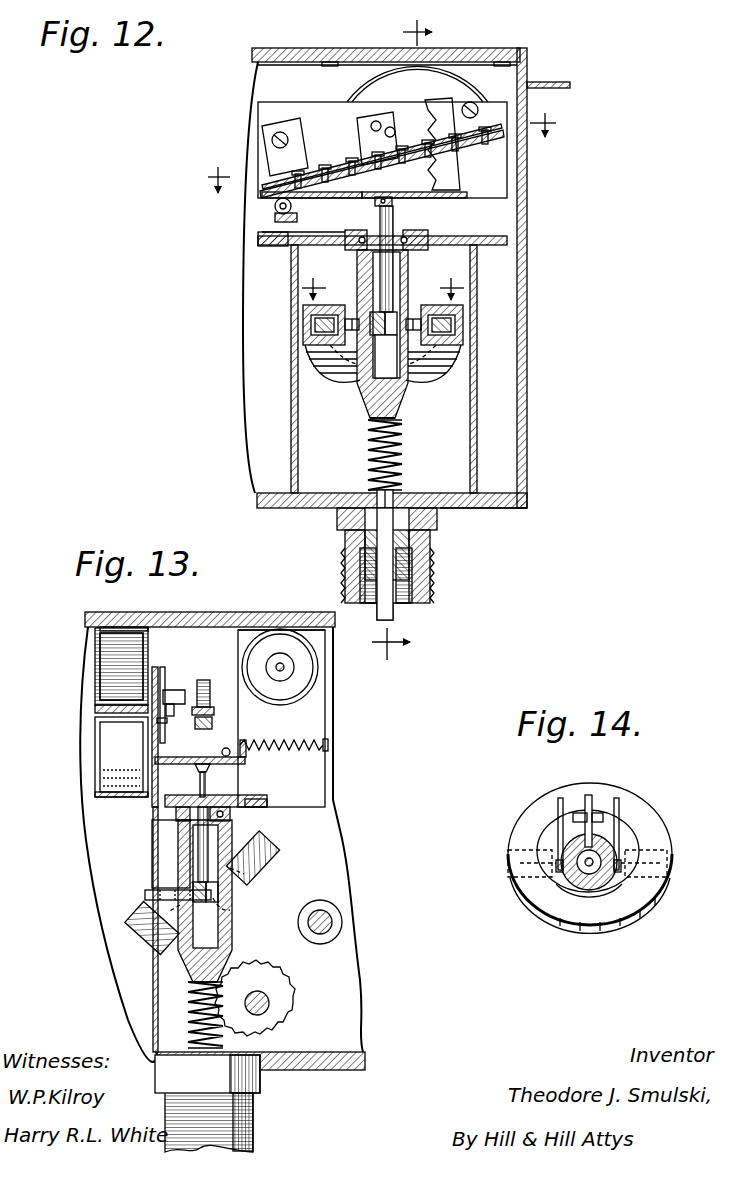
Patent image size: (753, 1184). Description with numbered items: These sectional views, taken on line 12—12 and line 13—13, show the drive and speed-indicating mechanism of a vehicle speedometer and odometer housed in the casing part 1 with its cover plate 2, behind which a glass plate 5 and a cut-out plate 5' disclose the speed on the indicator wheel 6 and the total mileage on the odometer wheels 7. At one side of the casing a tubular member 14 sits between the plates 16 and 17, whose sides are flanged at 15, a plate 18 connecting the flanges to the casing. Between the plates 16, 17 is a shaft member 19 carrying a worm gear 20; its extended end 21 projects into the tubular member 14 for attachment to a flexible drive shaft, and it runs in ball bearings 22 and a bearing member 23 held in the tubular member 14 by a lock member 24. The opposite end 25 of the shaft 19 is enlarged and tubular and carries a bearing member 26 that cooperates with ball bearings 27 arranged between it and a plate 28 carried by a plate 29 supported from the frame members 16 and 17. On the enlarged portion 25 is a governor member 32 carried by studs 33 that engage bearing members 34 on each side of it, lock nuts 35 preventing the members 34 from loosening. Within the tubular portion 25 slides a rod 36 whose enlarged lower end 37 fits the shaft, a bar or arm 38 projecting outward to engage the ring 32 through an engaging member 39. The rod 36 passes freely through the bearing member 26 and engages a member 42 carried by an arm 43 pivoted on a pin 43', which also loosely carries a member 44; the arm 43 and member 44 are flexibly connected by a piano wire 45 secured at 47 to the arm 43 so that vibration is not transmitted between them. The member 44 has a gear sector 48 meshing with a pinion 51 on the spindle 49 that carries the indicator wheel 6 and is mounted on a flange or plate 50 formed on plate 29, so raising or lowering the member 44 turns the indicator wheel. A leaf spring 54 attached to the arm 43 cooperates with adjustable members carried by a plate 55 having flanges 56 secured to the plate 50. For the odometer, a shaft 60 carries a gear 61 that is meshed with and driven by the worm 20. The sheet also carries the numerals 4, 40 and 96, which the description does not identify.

In FIG. 12, the casing part 1 is at (527, 282).
In FIG. 13, the casing part 1 is at (88, 848).
In FIG. 12, the cover plate 2 is at (268, 60).
In FIG. 13, the cover plate 2 is at (88, 627).
In FIG. 12, the cover plate 4 is at (510, 58).
In FIG. 12, the glass plate 5 is at (381, 111).
In FIG. 13, the glass plate 5 is at (281, 610).
In FIG. 12, the plate 5' is at (416, 48).
In FIG. 13, the plate 5' is at (169, 610).
In FIG. 12, the indicator wheel 6 is at (484, 60).
In FIG. 13, the indicator wheel 6 is at (128, 630).
In FIG. 13, the odometer wheels 7 is at (300, 678).
In FIG. 13, the section line 12— 12 is at (316, 720).
In FIG. 12, the section line 13— 13 is at (402, 340).
In FIG. 12, the tubular member 14 is at (432, 580).
In FIG. 13, the tubular member 14 is at (250, 1110).
In FIG. 12, the flanges 15 is at (436, 488).
In FIG. 13, the flanges 15 is at (296, 1054).
In FIG. 12, the plate 16 is at (292, 372).
In FIG. 12, the plate 17 is at (478, 422).
In FIG. 12, the plate 18 is at (474, 508).
In FIG. 13, the plate 18 is at (326, 930).
In FIG. 12, the shaft member 19 is at (404, 436).
In FIG. 13, the shaft member 19 is at (192, 990).
In FIG. 12, the worm gear 20 is at (368, 458).
In FIG. 13, the worm gear 20 is at (190, 998).
In FIG. 12, the extended end 21 is at (358, 555).
In FIG. 12, the ball bearings 22 is at (372, 484).
In FIG. 12, the bearing member 23 is at (337, 518).
In FIG. 12, the lock member 24 is at (415, 536).
In FIG. 12, the enlarged tubular end 25 is at (408, 268).
In FIG. 13, the enlarged tubular end 25 is at (232, 936).
In FIG. 14, the enlarged tubular end 25 is at (615, 835).
In FIG. 12, the bearing member 26 is at (358, 256).
In FIG. 13, the bearing member 26 is at (225, 826).
In FIG. 12, the ball bearings 27 is at (428, 215).
In FIG. 13, the ball bearings 27 is at (245, 800).
In FIG. 12, the plate 28 is at (303, 235).
In FIG. 13, the plate 28 is at (176, 815).
In FIG. 12, the plate 29 is at (260, 240).
In FIG. 13, the plate 29 is at (266, 808).
In FIG. 12, the governor member 32 is at (383, 378).
In FIG. 13, the governor member 32 is at (280, 848).
In FIG. 14, the governor member 32 is at (624, 795).
In FIG. 12, the studs 33 is at (468, 300).
In FIG. 13, the studs 33 is at (268, 872).
In FIG. 14, the studs 33 is at (556, 868).
In FIG. 12, the bearing members 34 is at (303, 336).
In FIG. 14, the bearing members 34 is at (515, 845).
In FIG. 12, the lock nuts 35 is at (316, 323).
In FIG. 14, the lock nuts 35 is at (508, 862).
In FIG. 12, the movable rod 36 is at (394, 290).
In FIG. 13, the movable rod 36 is at (198, 843).
In FIG. 14, the movable rod 36 is at (575, 880).
In FIG. 12, the enlarged lower end 37 is at (418, 350).
In FIG. 13, the enlarged lower end 37 is at (213, 905).
In FIG. 14, the enlarged lower end 37 is at (565, 890).
In FIG. 12, the bar or arm 38 is at (392, 340).
In FIG. 13, the bar or arm 38 is at (172, 893).
In FIG. 14, the bar or arm 38 is at (585, 798).
In FIG. 13, the engaging member 39 is at (150, 898).
In FIG. 14, the engaging member 39 is at (600, 812).
In FIG. 12, the valve 40 is at (362, 312).
In FIG. 13, the valve 40 is at (190, 860).
In FIG. 14, the valve 40 is at (600, 850).
In FIG. 12, the member 42 is at (376, 206).
In FIG. 13, the member 42 is at (198, 772).
In FIG. 12, the arm 43 is at (312, 206).
In FIG. 13, the arm 43 is at (216, 783).
In FIG. 12, the pin or shaft 43' is at (247, 213).
In FIG. 12, the member 44 is at (414, 206).
In FIG. 13, the member 44 is at (112, 780).
In FIG. 13, the wire 45 is at (245, 764).
In FIG. 13, the securing point 47 is at (226, 752).
In FIG. 12, the gear sector 48 is at (452, 148).
In FIG. 13, the gear sector 48 is at (156, 746).
In FIG. 12, the spindle 49 is at (382, 161).
In FIG. 13, the spindle 49 is at (100, 712).
In FIG. 12, the flange or plate 50 is at (280, 102).
In FIG. 13, the flange or plate 50 is at (96, 758).
In FIG. 12, the pinion 51 is at (468, 118).
In FIG. 13, the pinion 51 is at (160, 722).
In FIG. 12, the spring 54 is at (368, 130).
In FIG. 13, the spring 54 is at (214, 724).
In FIG. 12, the plate 55 is at (328, 165).
In FIG. 13, the plate 55 is at (180, 688).
In FIG. 12, the flanges 56 is at (262, 145).
In FIG. 13, the flanges 56 is at (165, 690).
In FIG. 13, the shaft 60 is at (262, 994).
In FIG. 13, the gear 61 is at (290, 1005).
In FIG. 13, the dial pivot 96 is at (290, 665).